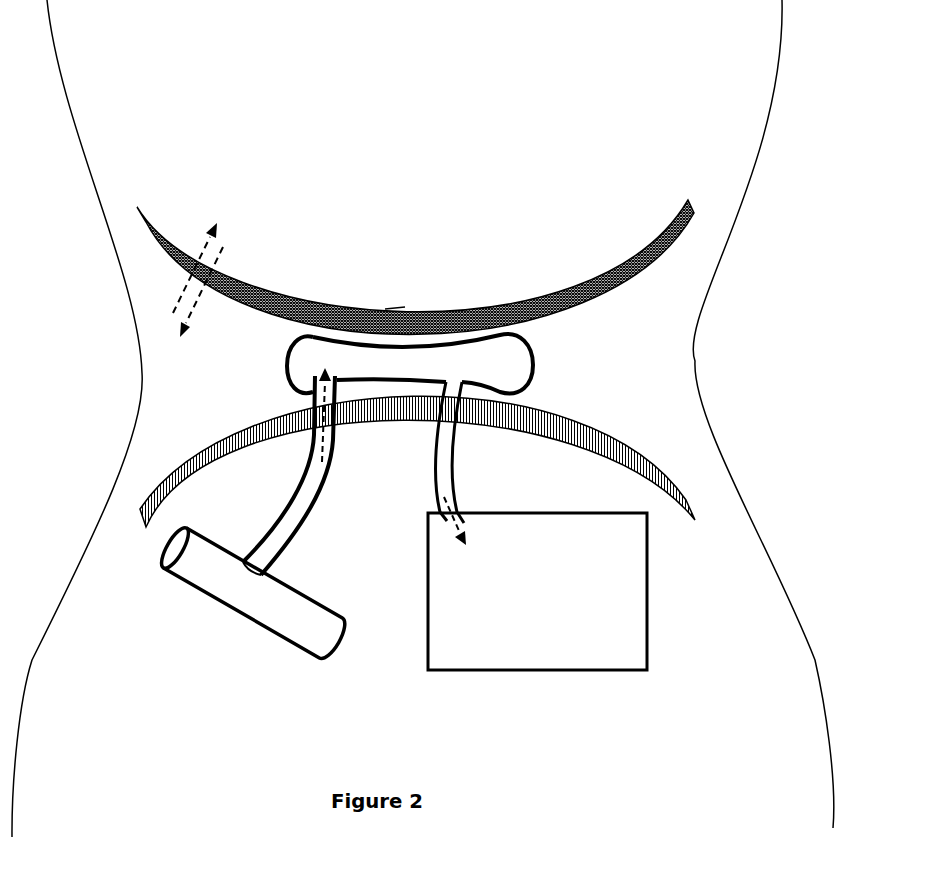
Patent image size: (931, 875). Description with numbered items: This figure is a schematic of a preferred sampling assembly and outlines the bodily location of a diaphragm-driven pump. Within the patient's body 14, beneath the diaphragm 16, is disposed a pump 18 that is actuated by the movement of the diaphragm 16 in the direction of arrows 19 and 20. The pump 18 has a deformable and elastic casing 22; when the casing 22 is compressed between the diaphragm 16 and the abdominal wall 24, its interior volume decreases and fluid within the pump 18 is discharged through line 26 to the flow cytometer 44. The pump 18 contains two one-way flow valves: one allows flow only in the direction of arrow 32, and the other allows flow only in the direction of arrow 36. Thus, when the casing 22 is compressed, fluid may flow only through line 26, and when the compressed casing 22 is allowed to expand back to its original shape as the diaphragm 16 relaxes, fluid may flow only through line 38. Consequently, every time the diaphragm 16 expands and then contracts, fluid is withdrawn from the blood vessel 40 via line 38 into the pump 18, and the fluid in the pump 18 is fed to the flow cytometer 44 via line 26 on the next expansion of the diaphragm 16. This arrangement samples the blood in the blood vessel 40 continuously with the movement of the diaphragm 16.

The body 14 is at (125, 288).
The diaphragm 16 is at (660, 242).
The pump 18 is at (533, 339).
The arrow 19 is at (210, 235).
The arrow 20 is at (210, 272).
The casing 22 is at (393, 308).
The abdominal wall 24 is at (691, 526).
The line 26 is at (462, 431).
The arrow 32 is at (428, 533).
The arrow 36 is at (317, 440).
The line 38 is at (326, 472).
The blood vessel 40 is at (232, 610).
The flow cytometer 44 is at (602, 672).